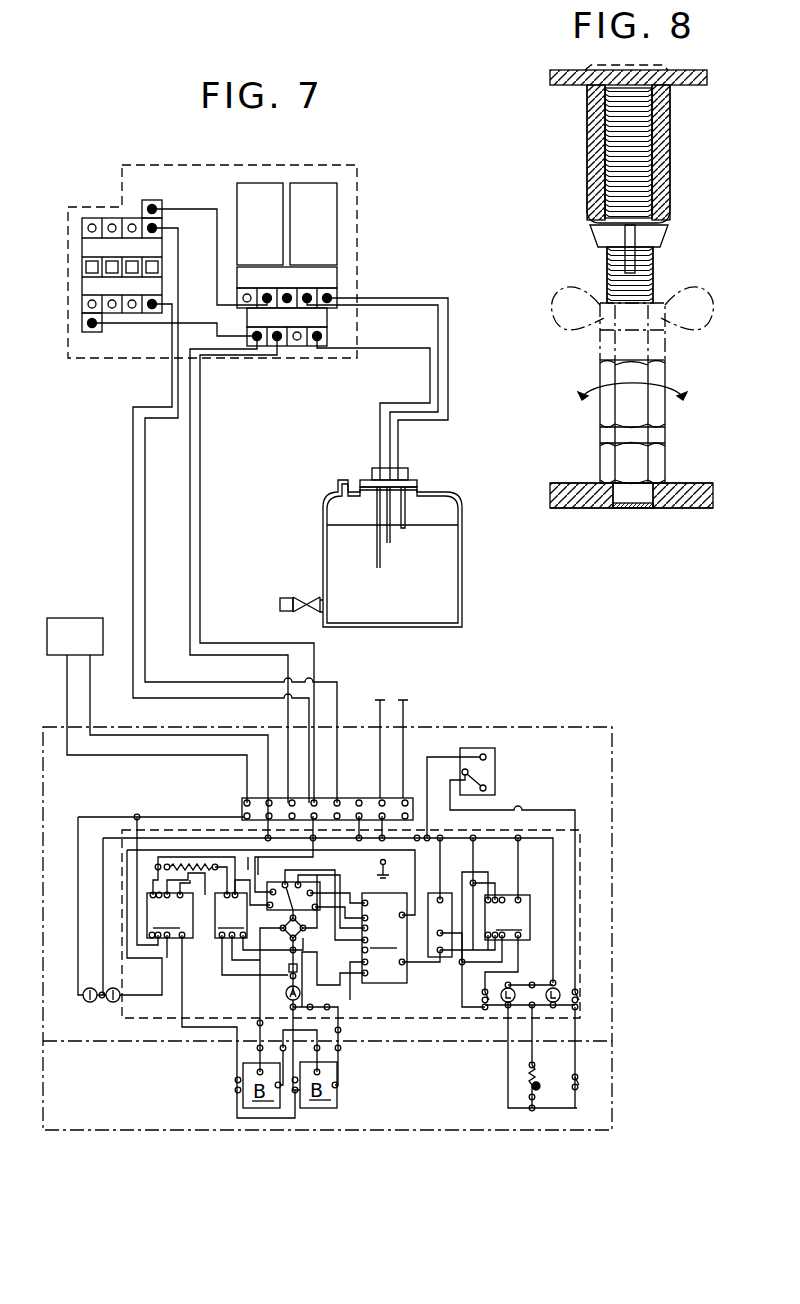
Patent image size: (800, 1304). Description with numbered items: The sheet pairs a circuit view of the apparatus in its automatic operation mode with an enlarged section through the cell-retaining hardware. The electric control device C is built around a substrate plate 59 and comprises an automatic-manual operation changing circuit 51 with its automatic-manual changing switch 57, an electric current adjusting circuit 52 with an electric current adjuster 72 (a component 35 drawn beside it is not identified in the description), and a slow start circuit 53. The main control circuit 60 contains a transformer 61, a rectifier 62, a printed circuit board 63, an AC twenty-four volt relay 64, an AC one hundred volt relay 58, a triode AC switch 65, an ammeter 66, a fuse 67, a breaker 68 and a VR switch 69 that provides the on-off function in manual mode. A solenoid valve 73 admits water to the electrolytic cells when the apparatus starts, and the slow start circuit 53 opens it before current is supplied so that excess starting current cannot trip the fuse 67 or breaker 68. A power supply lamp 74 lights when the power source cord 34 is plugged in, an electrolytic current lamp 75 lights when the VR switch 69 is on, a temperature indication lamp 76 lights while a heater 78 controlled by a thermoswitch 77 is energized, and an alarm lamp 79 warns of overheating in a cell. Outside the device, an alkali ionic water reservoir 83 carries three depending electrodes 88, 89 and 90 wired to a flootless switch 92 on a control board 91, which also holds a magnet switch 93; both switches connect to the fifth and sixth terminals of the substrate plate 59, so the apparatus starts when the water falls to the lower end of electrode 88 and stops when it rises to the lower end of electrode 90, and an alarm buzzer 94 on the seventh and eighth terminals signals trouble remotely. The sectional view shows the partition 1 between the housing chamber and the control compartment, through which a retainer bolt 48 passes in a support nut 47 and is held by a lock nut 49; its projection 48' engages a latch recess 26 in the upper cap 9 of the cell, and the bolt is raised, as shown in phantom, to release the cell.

In FIG. 7, the electric control device C is at (588, 727).
In FIG. 7, the control board 91 is at (357, 190).
In FIG. 7, the flootless switch 92 is at (337, 243).
In FIG. 7, the magnet switch 93 is at (162, 273).
In FIG. 7, the alkali ionic water reservoir 83 is at (440, 492).
In FIG. 7, the electrode 88 is at (376, 558).
In FIG. 7, the electrode 89 is at (390, 540).
In FIG. 7, the electrode 90 is at (406, 520).
In FIG. 7, the alarm buzzer 94 is at (93, 618).
In FIG. 7, the power source cord 34 is at (382, 712).
In FIG. 7, the automatic-manual operation changing circuit 51 is at (438, 748).
In FIG. 7, the automatic-manual changing switch 57 is at (501, 870).
In FIG. 7, the substrate plate 59 is at (242, 804).
In FIG. 7, the slow start circuit 53 is at (262, 857).
In FIG. 7, the main control circuit 60 is at (580, 863).
In FIG. 7, the AC 24 volt relay 64 is at (191, 897).
In FIG. 7, the printed circuit board 63 is at (259, 921).
In FIG. 7, the electric current adjuster 72 is at (327, 882).
In FIG. 7, the ground 35 is at (395, 865).
In FIG. 7, the rectifier 62 is at (288, 973).
In FIG. 7, the triode AC switch 65 is at (288, 970).
In FIG. 7, the ammeter 66 is at (286, 995).
In FIG. 7, the transformer 61 is at (354, 950).
In FIG. 7, the electric current adjusting circuit 52 is at (325, 935).
In FIG. 7, the breaker 68 is at (320, 1010).
In FIG. 7, the solenoid valve 73 is at (448, 989).
In FIG. 7, the AC 100 volt relay 58 is at (485, 922).
In FIG. 7, the VR switch 69 is at (483, 1000).
In FIG. 7, the temperature indication lamp 76 is at (506, 1003).
In FIG. 7, the power supply lamp 74 is at (561, 990).
In FIG. 7, the fuse 67 is at (580, 999).
In FIG. 7, the heater 78 is at (531, 1087).
In FIG. 7, the thermoswitch 77 is at (580, 1082).
In FIG. 7, the alarm lamp 79 is at (88, 1002).
In FIG. 7, the electrolytic current lamp 75 is at (113, 1002).
In FIG. 8, the partition 1 is at (686, 85).
In FIG. 8, the support nut 47 is at (671, 170).
In FIG. 8, the lock nut 49 is at (668, 252).
In FIG. 8, the retainer bolt 48 is at (634, 326).
In FIG. 8, the projection 48' is at (643, 425).
In FIG. 8, the upper cap 9 is at (556, 484).
In FIG. 8, the latch recess 26 is at (683, 488).